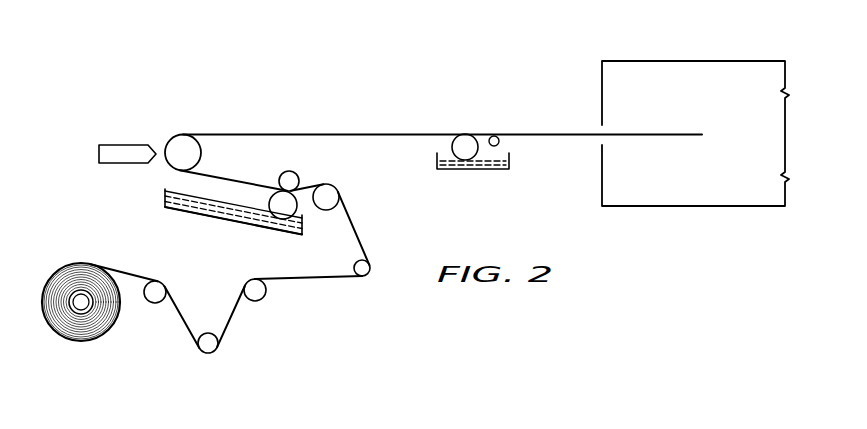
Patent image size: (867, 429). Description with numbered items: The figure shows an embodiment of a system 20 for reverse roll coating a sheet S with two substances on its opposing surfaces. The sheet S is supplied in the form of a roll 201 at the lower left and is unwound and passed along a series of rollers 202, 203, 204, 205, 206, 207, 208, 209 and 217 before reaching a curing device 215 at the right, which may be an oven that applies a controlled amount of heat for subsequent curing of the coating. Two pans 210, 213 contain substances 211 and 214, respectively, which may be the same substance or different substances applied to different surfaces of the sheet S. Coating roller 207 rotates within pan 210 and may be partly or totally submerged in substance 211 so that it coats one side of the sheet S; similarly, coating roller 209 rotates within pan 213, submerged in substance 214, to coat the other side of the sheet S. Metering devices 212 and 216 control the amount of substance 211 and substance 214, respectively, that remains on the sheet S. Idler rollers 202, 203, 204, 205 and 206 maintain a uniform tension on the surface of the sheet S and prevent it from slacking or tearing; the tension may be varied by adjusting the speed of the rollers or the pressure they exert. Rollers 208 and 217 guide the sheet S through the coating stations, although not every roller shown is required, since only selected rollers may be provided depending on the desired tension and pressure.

The system 20 is at (116, 76).
The sheet S is at (82, 263).
The roll 201 is at (70, 343).
The idler roller 202 is at (153, 304).
The idler roller 203 is at (208, 333).
The idler roller 204 is at (265, 300).
The idler roller 205 is at (355, 266).
The idler roller 206 is at (328, 185).
The coating roller 207 is at (280, 219).
The roller 208 is at (179, 137).
The coating roller 209 is at (457, 142).
The pan 210 is at (217, 219).
The substance 211 is at (182, 209).
The metering device 212 is at (117, 143).
The pan 213 is at (483, 171).
The substance 214 is at (463, 170).
The curing device 215 is at (680, 186).
The metering device 216 is at (497, 137).
The roller 217 is at (279, 177).